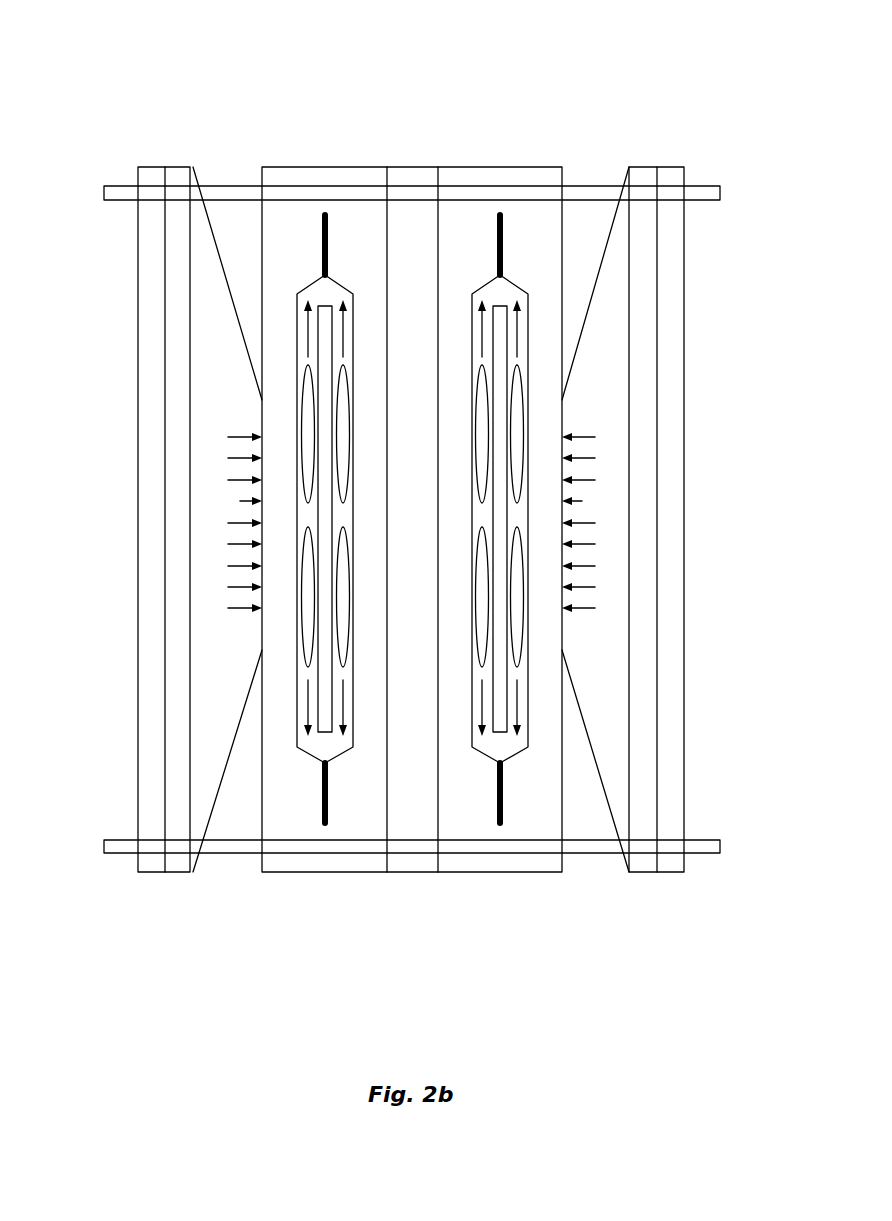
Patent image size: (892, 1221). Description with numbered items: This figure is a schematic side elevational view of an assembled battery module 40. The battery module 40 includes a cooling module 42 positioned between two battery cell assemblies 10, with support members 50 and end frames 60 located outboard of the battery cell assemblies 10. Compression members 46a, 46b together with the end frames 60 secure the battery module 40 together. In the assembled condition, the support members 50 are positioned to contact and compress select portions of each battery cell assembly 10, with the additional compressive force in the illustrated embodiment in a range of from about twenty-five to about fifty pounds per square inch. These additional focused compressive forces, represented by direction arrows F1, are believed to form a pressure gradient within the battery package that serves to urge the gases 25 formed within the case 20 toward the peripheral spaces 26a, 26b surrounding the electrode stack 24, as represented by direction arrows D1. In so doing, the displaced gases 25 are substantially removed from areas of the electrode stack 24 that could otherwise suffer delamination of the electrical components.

The battery module 40 is at (708, 47).
The battery cell assembly 10 is at (333, 873).
The cooling module 42 is at (407, 873).
The compression member 46a is at (708, 835).
The compression member 46b is at (712, 183).
The support member 50 is at (210, 825).
The end frame 60 is at (142, 875).
The case 20 is at (308, 757).
The electrode stack 24 is at (325, 417).
The gases 25 is at (477, 462).
The peripheral space 26a is at (333, 747).
The peripheral space 26b is at (325, 292).
The direction arrows D1 is at (307, 327).
The direction arrows F1 is at (411, 522).